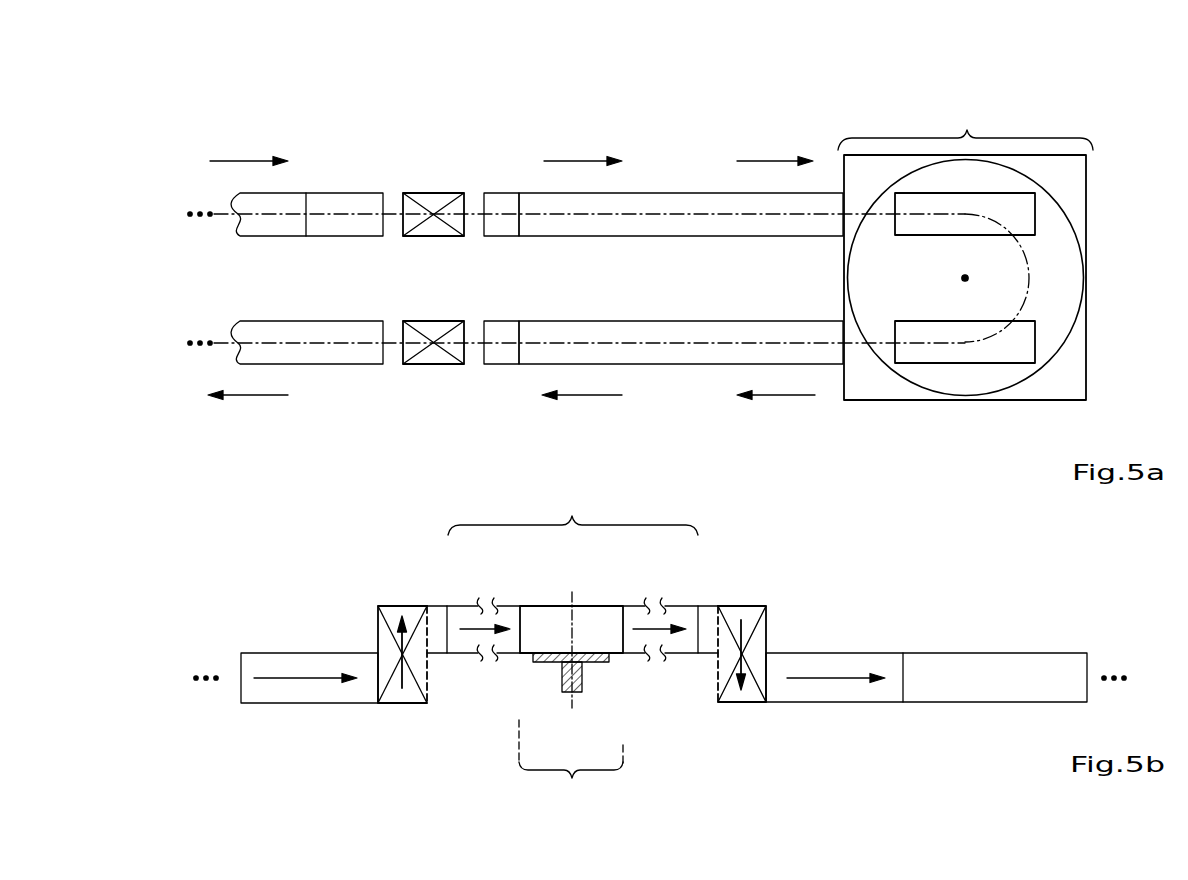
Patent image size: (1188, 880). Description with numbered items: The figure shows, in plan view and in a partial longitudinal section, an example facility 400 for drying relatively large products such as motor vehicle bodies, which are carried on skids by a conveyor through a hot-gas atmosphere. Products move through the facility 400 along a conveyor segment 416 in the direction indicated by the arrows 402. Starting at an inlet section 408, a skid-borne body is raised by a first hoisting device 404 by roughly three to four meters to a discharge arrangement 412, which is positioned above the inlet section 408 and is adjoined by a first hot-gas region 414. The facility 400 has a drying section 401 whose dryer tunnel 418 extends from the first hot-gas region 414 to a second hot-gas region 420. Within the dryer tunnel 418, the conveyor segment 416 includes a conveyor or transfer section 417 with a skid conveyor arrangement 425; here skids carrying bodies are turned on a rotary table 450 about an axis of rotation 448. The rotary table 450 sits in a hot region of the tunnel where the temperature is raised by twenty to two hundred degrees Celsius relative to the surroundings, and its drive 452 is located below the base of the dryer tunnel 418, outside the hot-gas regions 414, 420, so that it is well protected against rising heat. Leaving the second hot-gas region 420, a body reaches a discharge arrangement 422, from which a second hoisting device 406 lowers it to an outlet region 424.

In FIG. 5A, the facility 400 is at (1082, 114).
In FIG. 5B, the facility 400 is at (1082, 590).
In FIG. 5B, the drying section 401 is at (573, 514).
In FIG. 5A, the arrows 402 is at (243, 161).
In FIG. 5B, the arrows 402 is at (300, 678).
In FIG. 5A, the first hoisting device 404 is at (434, 193).
In FIG. 5B, the first hoisting device 404 is at (388, 606).
In FIG. 5A, the hoisting device 406 is at (434, 365).
In FIG. 5B, the hoisting device 406 is at (755, 606).
In FIG. 5A, the inlet section 408 is at (337, 193).
In FIG. 5B, the inlet section 408 is at (257, 653).
In FIG. 5A, the discharge arrangement 412 is at (501, 193).
In FIG. 5B, the discharge arrangement 412 is at (437, 606).
In FIG. 5A, the first hot-gas region 414 is at (711, 200).
In FIG. 5B, the first hot-gas region 414 is at (508, 606).
In FIG. 5A, the conveyor segment 416 is at (256, 340).
In FIG. 5A, the transfer section 417 is at (965, 128).
In FIG. 5B, the transfer section 417 is at (571, 764).
In FIG. 5A, the dryer tunnel 418 is at (660, 193).
In FIG. 5B, the dryer tunnel 418 is at (590, 606).
In FIG. 5A, the second hot-gas region 420 is at (711, 356).
In FIG. 5B, the second hot-gas region 420 is at (636, 606).
In FIG. 5A, the discharge arrangement 422 is at (501, 365).
In FIG. 5B, the discharge arrangement 422 is at (708, 606).
In FIG. 5A, the outlet region 424 is at (336, 365).
In FIG. 5B, the outlet region 424 is at (873, 653).
In FIG. 5A, the skid conveyor arrangement 425 is at (905, 383).
In FIG. 5A, the axis of rotation 448 is at (962, 278).
In FIG. 5B, the axis of rotation 448 is at (572, 592).
In FIG. 5B, the rotary table 450 is at (540, 662).
In FIG. 5B, the drive 452 is at (582, 676).